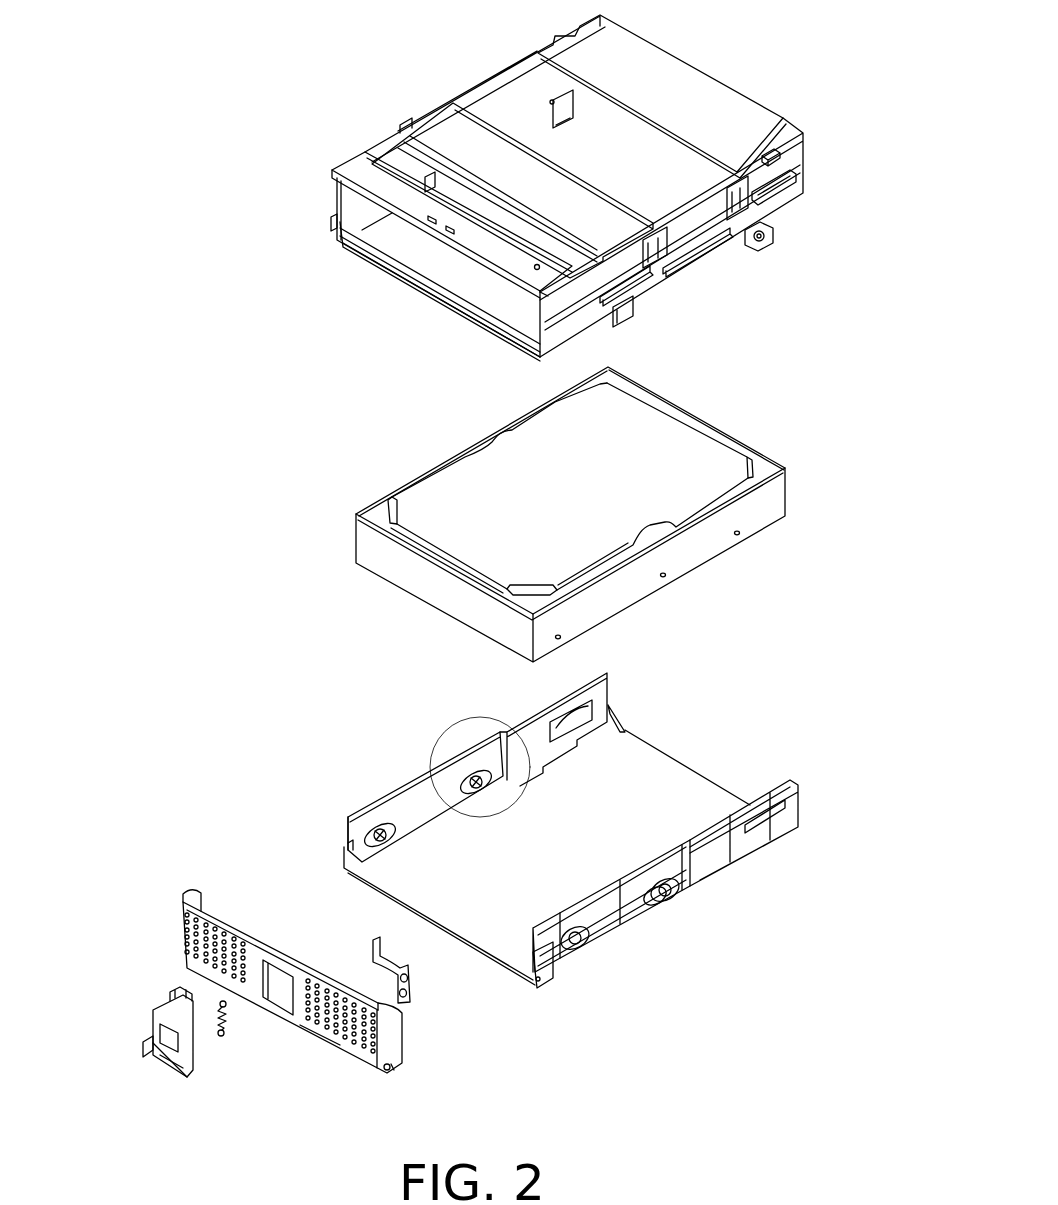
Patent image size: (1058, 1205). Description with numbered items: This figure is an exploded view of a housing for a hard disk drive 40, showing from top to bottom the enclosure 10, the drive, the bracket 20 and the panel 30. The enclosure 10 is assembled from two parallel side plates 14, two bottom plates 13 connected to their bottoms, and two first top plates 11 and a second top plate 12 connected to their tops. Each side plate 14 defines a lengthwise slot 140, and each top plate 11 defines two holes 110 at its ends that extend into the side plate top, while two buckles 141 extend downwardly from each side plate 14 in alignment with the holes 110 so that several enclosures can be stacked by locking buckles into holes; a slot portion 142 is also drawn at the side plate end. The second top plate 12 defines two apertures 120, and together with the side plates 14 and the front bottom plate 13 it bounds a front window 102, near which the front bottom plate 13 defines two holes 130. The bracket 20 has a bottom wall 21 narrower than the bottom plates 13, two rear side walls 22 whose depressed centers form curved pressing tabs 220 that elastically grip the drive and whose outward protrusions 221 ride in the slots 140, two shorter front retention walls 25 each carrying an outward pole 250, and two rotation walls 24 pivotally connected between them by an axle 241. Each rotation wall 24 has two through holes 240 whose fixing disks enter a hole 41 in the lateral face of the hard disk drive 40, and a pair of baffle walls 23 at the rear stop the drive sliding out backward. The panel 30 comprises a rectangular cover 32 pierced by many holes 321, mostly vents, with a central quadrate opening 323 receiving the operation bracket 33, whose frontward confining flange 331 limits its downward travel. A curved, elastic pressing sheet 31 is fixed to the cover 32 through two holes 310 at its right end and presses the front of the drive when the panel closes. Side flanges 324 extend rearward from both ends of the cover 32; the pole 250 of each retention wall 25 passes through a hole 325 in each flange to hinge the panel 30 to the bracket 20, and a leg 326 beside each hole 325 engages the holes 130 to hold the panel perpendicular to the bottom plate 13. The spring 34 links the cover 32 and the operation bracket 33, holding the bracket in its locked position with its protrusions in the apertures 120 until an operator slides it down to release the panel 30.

The enclosure 10 is at (566, 209).
The first top plate 11 is at (450, 118).
The hole 110 is at (422, 122).
The second top plate 12 is at (355, 168).
The bottom plate 13 is at (470, 293).
The side plate 14 is at (523, 83).
The window 102 is at (517, 300).
The aperture 120 is at (427, 228).
The hole 130 is at (358, 227).
The slot 140 is at (778, 200).
The buckle 141 is at (622, 313).
The slot 142 is at (757, 185).
The hard disk drive 40 is at (580, 509).
The hole 41 is at (562, 638).
The bracket 20 is at (569, 853).
The bottom wall 21 is at (707, 797).
The side wall 22 is at (535, 738).
The pressing tab 220 is at (613, 693).
The protrusion 221 is at (783, 838).
The baffle wall 23 is at (625, 713).
The rotation wall 24 is at (407, 807).
The through hole 240 is at (667, 910).
The axle 241 is at (370, 838).
The retention wall 25 is at (547, 970).
The pole 250 is at (538, 985).
The panel 30 is at (97, 867).
The pressing sheet 31 is at (298, 931).
The hole 310 is at (417, 983).
The cover 32 is at (300, 1013).
The hole 321 is at (342, 1053).
The opening 323 is at (287, 997).
The side flange 324 is at (392, 1032).
The hole 325 is at (388, 1071).
The leg 326 is at (395, 1068).
The operation bracket 33 is at (152, 1047).
The confining flange 331 is at (147, 1050).
The spring 34 is at (217, 1013).